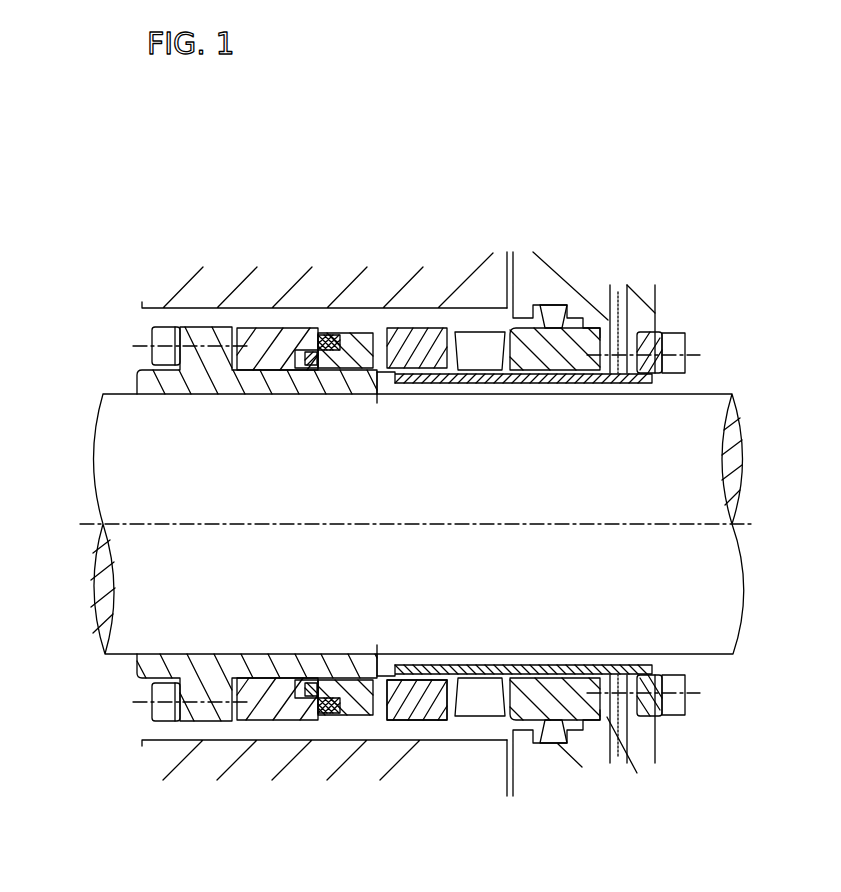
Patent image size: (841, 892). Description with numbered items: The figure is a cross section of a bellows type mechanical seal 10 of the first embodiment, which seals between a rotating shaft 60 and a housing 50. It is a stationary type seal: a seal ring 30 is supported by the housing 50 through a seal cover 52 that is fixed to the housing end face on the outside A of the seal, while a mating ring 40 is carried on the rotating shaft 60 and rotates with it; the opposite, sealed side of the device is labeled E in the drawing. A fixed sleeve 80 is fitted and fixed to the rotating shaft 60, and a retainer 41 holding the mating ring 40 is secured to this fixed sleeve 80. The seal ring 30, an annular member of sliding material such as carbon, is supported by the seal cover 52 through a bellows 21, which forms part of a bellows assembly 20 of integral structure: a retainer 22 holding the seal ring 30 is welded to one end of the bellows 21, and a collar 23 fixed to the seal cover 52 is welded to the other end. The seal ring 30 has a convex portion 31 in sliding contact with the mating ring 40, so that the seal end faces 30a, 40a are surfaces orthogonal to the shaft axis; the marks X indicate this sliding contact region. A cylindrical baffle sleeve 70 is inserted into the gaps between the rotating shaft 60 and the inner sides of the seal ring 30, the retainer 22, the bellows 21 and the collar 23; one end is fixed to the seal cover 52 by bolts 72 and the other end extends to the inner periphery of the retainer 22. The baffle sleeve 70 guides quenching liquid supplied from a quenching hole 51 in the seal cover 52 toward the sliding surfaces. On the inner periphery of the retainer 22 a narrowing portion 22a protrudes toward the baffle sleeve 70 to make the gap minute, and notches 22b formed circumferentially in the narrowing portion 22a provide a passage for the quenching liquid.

The bellows type mechanical seal 10 is at (686, 287).
The bellows assembly 20 is at (473, 322).
The bellows 21 is at (484, 355).
The retainer 22 is at (412, 330).
The narrowing portion 22a is at (440, 717).
The notches 22b is at (395, 706).
The collar 23 is at (540, 330).
The seal ring 30 is at (381, 372).
The seal end face 30a is at (365, 712).
The convex portion 31 is at (358, 340).
The mating ring 40 is at (338, 333).
The seal end face 40a is at (333, 714).
The retainer 41 is at (270, 308).
The housing 50 is at (290, 318).
The quenching hole 51 is at (622, 292).
The seal cover 52 is at (645, 320).
The rotating shaft 60 is at (700, 406).
The baffle sleeve 70 is at (553, 365).
The bolts 72 is at (676, 337).
The fixed sleeve 80 is at (180, 383).
The outside of the seal A is at (794, 343).
The equipment side E is at (51, 323).
The sliding face position X is at (378, 524).